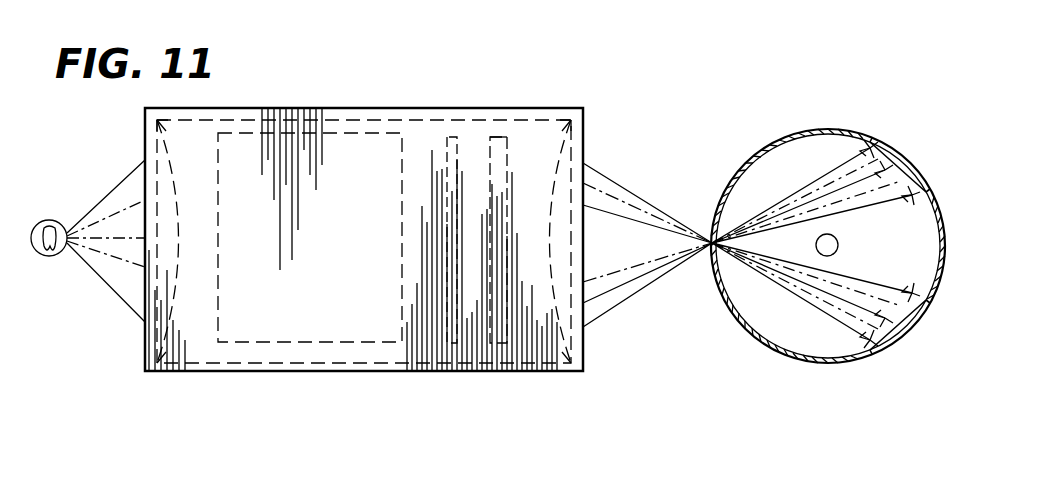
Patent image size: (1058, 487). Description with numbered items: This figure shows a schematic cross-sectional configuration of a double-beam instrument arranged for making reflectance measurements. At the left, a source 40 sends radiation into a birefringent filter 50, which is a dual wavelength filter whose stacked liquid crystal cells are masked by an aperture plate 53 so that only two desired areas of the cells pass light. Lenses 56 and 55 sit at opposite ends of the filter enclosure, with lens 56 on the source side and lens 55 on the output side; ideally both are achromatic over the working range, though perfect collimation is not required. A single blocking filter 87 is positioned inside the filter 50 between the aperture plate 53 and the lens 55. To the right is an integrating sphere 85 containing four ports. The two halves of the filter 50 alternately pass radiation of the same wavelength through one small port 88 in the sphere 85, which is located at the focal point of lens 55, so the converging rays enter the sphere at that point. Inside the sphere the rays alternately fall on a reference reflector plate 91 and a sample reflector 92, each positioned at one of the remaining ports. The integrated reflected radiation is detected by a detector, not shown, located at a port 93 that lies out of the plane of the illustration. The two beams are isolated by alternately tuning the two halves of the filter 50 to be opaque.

The source 40 is at (50, 220).
The birefringent filter 50 is at (555, 93).
The aperture plate 53 is at (445, 232).
The lens 55 is at (576, 160).
The lens 56 is at (185, 174).
The integrating sphere 85 is at (770, 145).
The blocking filter 87 is at (499, 135).
The port 88 is at (709, 240).
The reference reflector plate 91 is at (886, 152).
The sample reflector 92 is at (896, 336).
The port 93 is at (836, 242).